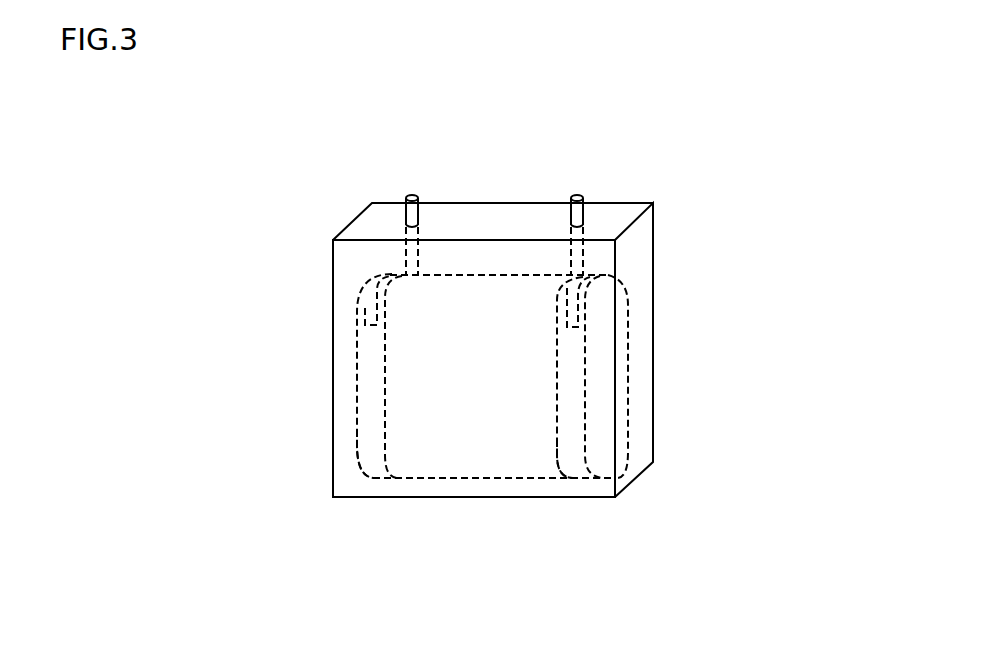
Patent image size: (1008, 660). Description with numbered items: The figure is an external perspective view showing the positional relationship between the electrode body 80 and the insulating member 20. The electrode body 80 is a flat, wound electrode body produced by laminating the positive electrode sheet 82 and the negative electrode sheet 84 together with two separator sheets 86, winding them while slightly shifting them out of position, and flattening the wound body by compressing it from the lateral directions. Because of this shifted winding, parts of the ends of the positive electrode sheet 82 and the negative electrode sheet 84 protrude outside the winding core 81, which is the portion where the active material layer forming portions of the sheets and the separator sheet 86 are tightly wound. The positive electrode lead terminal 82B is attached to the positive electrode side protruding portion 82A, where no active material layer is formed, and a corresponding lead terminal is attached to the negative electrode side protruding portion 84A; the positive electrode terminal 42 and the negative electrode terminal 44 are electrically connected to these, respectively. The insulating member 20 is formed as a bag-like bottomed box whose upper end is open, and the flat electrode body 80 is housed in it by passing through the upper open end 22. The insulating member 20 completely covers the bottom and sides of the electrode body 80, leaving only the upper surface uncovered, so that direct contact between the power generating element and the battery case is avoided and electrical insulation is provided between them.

The insulating member 20 is at (623, 488).
The upper open end 22 is at (517, 228).
The positive electrode terminal 42 is at (412, 197).
The negative electrode terminal 44 is at (577, 197).
The electrode body 80 is at (445, 268).
The winding core 81 is at (510, 445).
The positive electrode sheet 82 is at (355, 390).
The positive electrode side protruding portion 82A is at (386, 466).
The positive electrode lead terminal 82B is at (362, 310).
The negative electrode sheet 84 is at (592, 377).
The negative electrode side protruding portion 84A is at (580, 310).
The separator sheet 86 is at (451, 483).